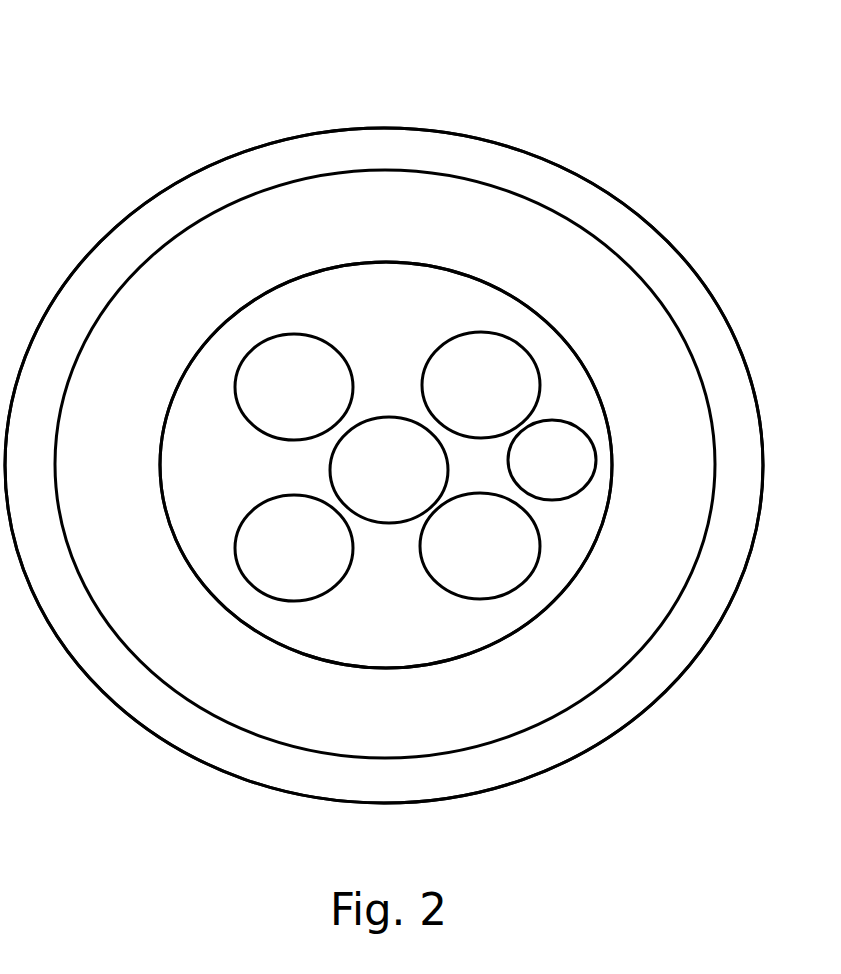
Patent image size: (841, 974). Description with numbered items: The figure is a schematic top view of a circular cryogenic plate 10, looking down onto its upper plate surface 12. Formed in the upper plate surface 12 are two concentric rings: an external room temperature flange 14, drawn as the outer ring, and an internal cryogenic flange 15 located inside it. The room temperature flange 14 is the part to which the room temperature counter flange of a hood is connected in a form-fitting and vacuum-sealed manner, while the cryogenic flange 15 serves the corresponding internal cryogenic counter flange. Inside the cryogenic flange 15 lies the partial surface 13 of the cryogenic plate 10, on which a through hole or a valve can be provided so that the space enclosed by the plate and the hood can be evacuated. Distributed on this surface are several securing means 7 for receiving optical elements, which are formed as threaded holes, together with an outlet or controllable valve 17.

The cryogenic plate 10 is at (258, 112).
The upper plate surface 12 is at (365, 128).
The room temperature flange 14 is at (212, 195).
The cryogenic flange 15 is at (224, 303).
The partial surface 13 is at (220, 476).
The securing means 7 is at (303, 398).
The outlet or controllable valve 17 is at (568, 472).